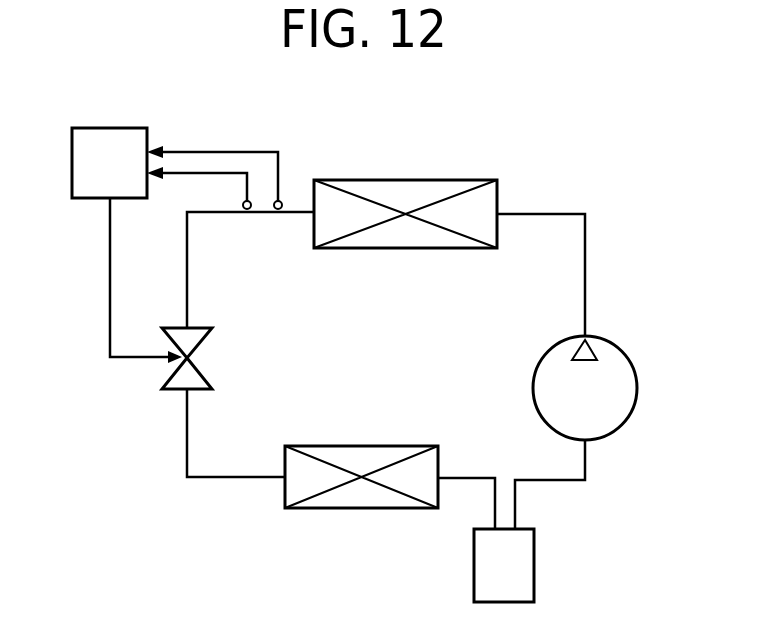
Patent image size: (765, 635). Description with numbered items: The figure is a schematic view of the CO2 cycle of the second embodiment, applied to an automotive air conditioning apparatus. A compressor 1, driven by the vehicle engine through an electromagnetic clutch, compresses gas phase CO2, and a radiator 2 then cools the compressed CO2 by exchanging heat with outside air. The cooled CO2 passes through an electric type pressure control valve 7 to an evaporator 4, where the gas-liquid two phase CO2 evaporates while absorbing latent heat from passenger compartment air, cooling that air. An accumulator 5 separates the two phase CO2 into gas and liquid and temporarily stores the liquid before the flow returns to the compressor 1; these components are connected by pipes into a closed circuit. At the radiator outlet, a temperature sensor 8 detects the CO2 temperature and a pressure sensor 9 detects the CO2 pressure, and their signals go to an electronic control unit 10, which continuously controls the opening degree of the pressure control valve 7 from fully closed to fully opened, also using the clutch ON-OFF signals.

The compressor 1 is at (637, 370).
The radiator 2 is at (426, 180).
The evaporator 4 is at (352, 508).
The accumulator 5 is at (534, 560).
The pressure control valve 7 is at (200, 370).
The temperature sensor 8 is at (243, 203).
The pressure sensor 9 is at (281, 204).
The ECU (electronic control unit) 10 is at (86, 128).